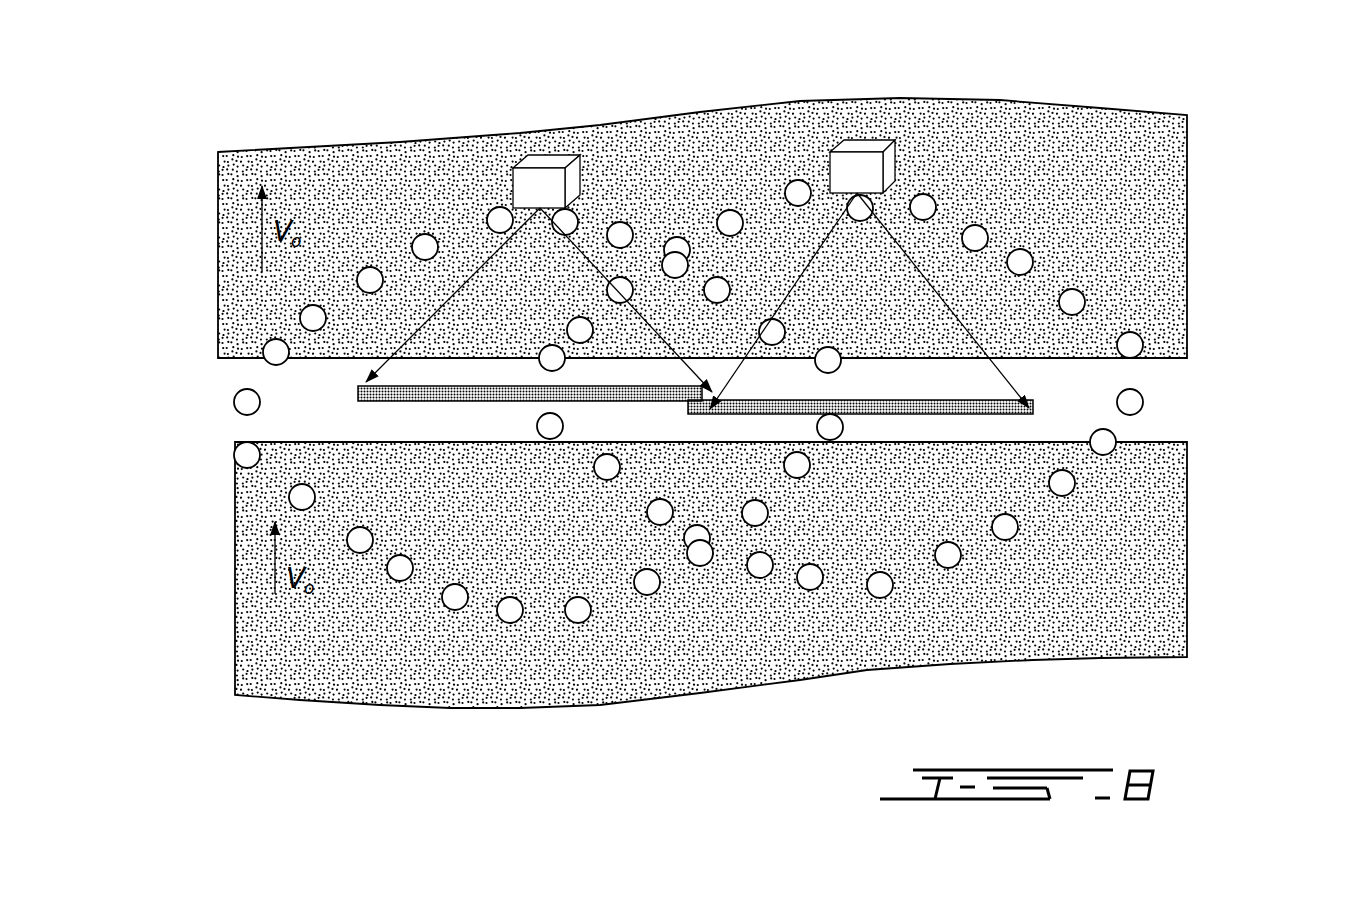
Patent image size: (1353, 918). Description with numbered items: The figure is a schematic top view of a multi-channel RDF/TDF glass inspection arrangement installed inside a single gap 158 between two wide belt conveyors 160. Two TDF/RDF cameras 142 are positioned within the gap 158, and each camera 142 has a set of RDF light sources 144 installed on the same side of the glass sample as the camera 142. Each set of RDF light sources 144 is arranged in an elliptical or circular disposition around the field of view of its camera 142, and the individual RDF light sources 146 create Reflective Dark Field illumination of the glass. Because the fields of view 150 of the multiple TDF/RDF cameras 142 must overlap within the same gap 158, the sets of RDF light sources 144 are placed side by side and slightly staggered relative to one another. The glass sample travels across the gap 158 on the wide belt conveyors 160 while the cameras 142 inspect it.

The TDF/RDF camera 142 is at (548, 155).
The set of RDF light sources 144 is at (962, 190).
The RDF light sources 146 is at (1143, 345).
The fields of view 150 is at (986, 400).
The gap 158 is at (1182, 419).
The wide belt conveyors 160 is at (1150, 200).